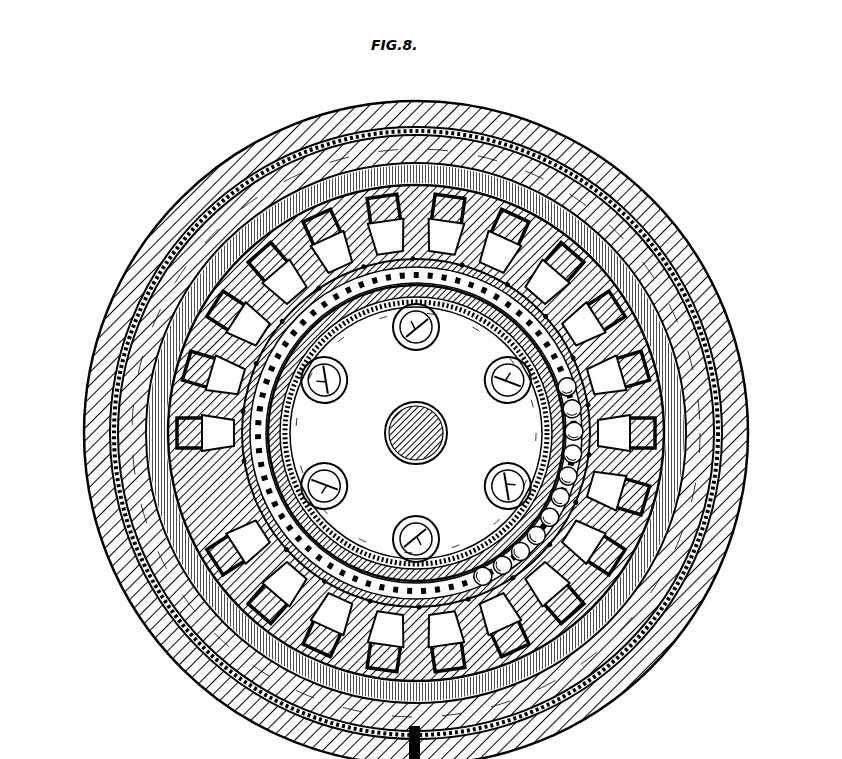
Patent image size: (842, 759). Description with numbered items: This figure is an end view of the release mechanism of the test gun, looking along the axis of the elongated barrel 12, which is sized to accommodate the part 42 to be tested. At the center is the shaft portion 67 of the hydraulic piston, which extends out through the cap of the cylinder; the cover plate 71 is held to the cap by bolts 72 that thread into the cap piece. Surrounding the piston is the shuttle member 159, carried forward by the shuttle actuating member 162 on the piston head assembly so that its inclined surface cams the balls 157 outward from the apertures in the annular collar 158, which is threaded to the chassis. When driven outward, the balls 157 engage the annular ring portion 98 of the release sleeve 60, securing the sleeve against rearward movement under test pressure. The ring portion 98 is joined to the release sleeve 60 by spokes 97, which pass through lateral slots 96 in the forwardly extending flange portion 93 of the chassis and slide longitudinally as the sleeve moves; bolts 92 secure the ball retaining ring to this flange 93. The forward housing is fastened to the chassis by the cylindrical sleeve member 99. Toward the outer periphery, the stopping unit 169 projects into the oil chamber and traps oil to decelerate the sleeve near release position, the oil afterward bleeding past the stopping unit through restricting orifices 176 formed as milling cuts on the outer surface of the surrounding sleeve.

The elongated barrel 12 is at (270, 127).
The cylindrical sleeve member 99 is at (577, 177).
The spokes 97 is at (223, 252).
The restricting orifices 176 is at (660, 283).
The stopping unit 169 is at (128, 385).
The part to be tested 42 is at (409, 433).
The release sleeve 60 is at (643, 490).
The annular ring portion 98 is at (627, 548).
The balls 157 is at (575, 486).
The annular collar 158 is at (485, 296).
The bolts 72 is at (391, 336).
The shaft portion 67 is at (402, 408).
The shuttle actuating member 162 is at (278, 417).
The shuttle member 159 is at (416, 433).
The cover plate 71 is at (416, 433).
The bolts 92 is at (560, 596).
The flange portion 93 is at (487, 626).
The lateral slots 96 is at (431, 641).